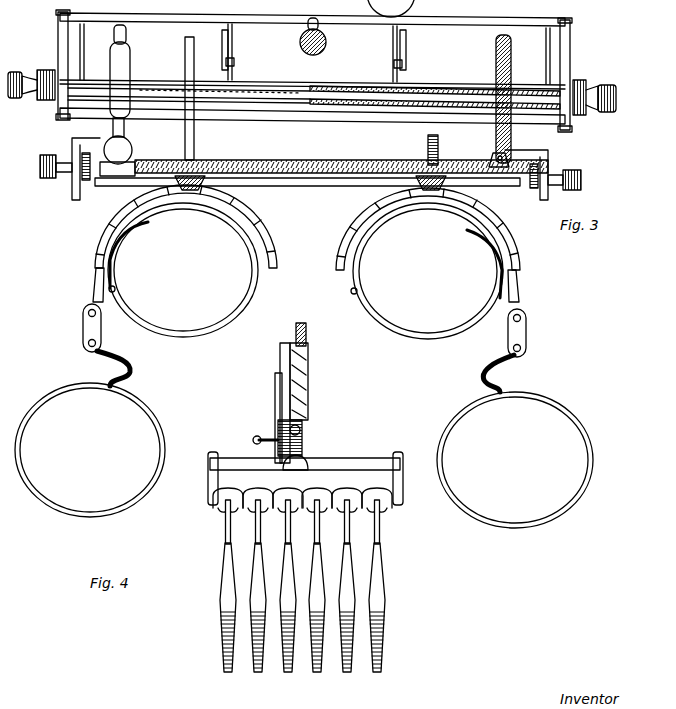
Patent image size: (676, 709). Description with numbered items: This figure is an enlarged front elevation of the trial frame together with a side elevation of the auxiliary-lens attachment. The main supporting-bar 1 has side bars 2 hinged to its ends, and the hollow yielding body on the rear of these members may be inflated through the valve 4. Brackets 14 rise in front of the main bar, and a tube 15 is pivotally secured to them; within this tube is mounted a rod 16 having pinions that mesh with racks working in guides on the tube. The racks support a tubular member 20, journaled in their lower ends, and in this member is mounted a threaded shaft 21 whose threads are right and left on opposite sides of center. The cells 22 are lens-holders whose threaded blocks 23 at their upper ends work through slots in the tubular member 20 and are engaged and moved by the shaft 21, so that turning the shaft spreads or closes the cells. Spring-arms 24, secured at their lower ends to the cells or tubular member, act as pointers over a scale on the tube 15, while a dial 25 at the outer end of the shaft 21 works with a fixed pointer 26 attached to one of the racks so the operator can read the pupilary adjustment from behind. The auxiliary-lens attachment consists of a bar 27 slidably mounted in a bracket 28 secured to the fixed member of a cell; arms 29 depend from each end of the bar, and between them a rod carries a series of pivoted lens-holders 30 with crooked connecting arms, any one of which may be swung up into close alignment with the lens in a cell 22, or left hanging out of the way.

In FIG. 3, the main supporting-bar 1 is at (246, 18).
In FIG. 3, the side bars 2 is at (408, 8).
In FIG. 3, the valve 4 is at (313, 28).
In FIG. 3, the brackets 14 is at (62, 52).
In FIG. 3, the tube 15 is at (280, 90).
In FIG. 3, the rod 16 is at (492, 90).
In FIG. 3, the tubular member 20 is at (384, 170).
In FIG. 3, the threaded shaft 21 is at (255, 170).
In FIG. 3, the cells 22 is at (305, 271).
In FIG. 4, the cells 22 is at (304, 403).
In FIG. 3, the threaded blocks 23 is at (186, 196).
In FIG. 4, the threaded blocks 23 is at (306, 336).
In FIG. 3, the spring-arms 24 is at (323, 101).
In FIG. 3, the dial 25 is at (72, 190).
In FIG. 3, the fixed pointer 26 is at (74, 142).
In FIG. 4, the bar 27 is at (350, 470).
In FIG. 3, the bracket 28 is at (96, 290).
In FIG. 4, the bracket 28 is at (305, 450).
In FIG. 3, the arms 29 is at (84, 328).
In FIG. 4, the arms 29 is at (208, 485).
In FIG. 3, the lens-holders 30 is at (304, 439).
In FIG. 4, the lens-holders 30 is at (226, 522).